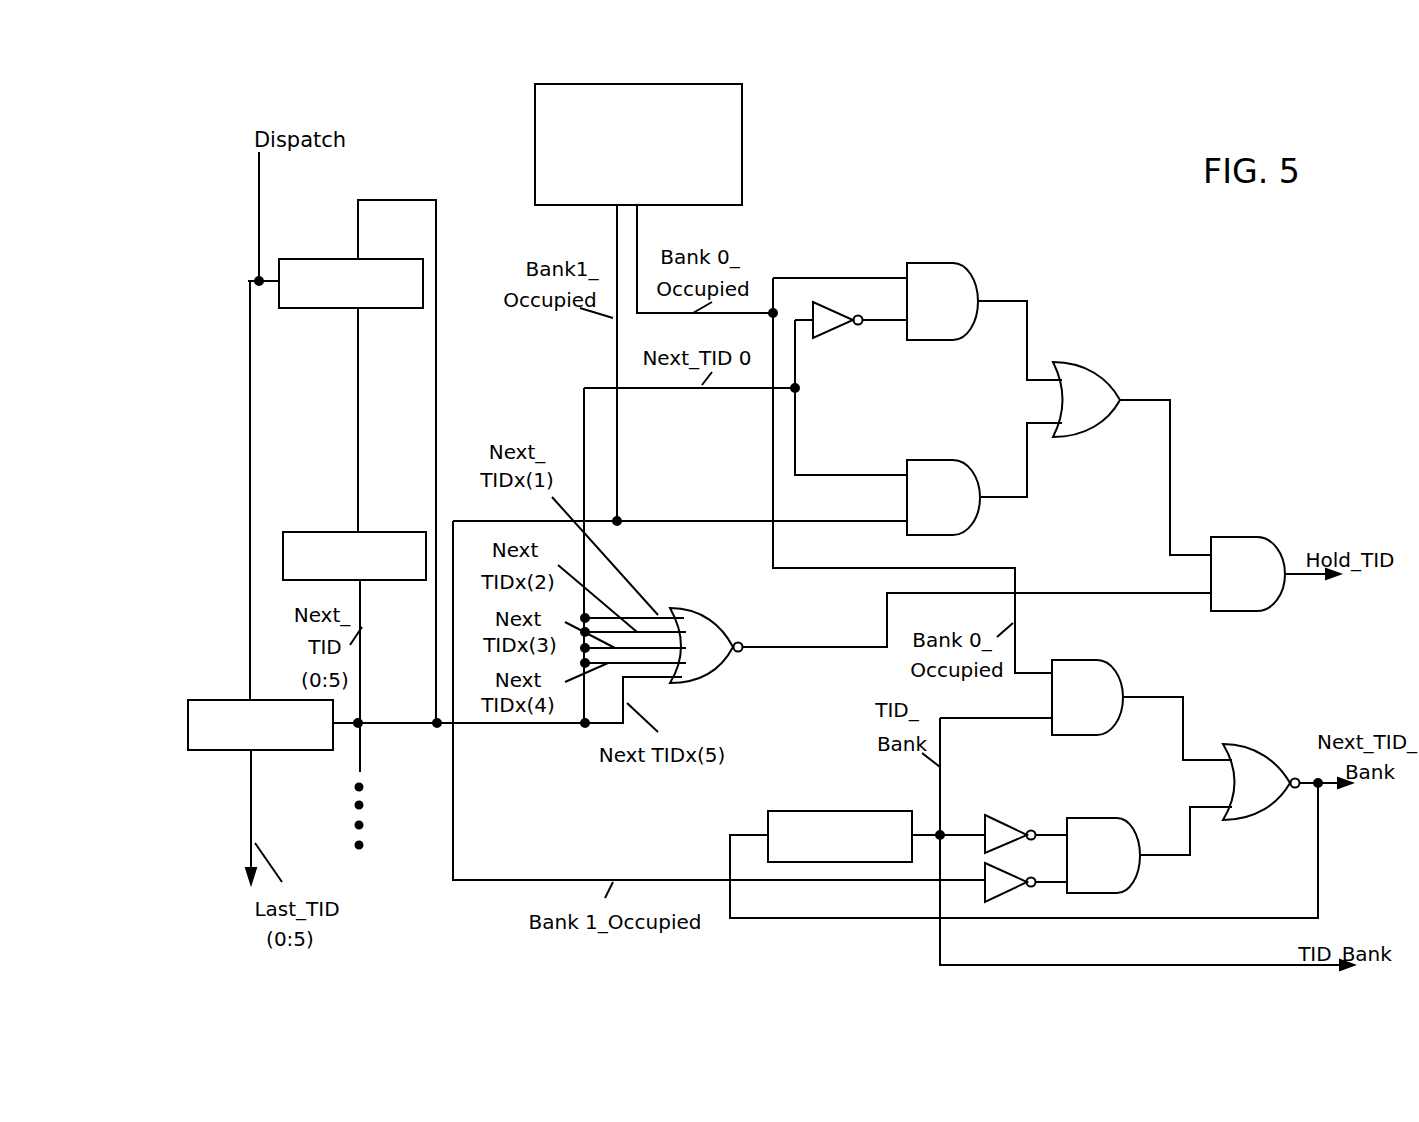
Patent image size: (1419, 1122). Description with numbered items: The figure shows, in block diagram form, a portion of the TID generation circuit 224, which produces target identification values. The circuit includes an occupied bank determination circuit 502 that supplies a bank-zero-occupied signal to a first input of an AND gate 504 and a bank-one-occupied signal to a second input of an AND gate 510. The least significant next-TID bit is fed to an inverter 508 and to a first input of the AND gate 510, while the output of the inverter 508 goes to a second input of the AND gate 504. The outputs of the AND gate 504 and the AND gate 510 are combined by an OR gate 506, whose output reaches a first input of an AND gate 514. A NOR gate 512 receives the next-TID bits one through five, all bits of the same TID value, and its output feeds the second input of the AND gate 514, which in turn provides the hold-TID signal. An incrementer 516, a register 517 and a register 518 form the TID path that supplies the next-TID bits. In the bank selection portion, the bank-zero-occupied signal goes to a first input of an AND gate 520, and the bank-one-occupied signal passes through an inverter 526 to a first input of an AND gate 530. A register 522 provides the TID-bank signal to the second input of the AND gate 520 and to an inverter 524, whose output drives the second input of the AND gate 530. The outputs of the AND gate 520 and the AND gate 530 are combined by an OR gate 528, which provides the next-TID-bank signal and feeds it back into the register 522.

The TID generation circuit 224 is at (455, 172).
The occupied bank determination circuit 502 is at (743, 115).
The AND gate 504 is at (922, 262).
The OR gate 506 is at (1070, 360).
The inverter 508 is at (828, 333).
The AND gate 510 is at (923, 458).
The NOR gate 512 is at (685, 607).
The AND gate 514 is at (1228, 535).
The incrementer 516 is at (328, 257).
The register 517 is at (235, 700).
The register 518 is at (330, 530).
The AND gate 520 is at (1068, 658).
The register 522 is at (862, 810).
The inverter 524 is at (1002, 818).
The inverter 526 is at (1002, 897).
The OR gate 528 is at (1245, 742).
The AND gate 530 is at (1080, 818).